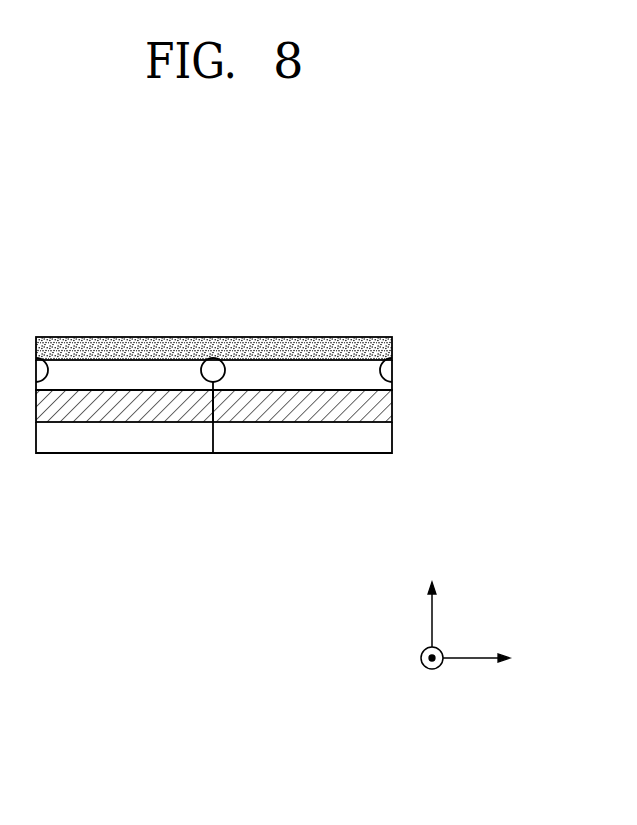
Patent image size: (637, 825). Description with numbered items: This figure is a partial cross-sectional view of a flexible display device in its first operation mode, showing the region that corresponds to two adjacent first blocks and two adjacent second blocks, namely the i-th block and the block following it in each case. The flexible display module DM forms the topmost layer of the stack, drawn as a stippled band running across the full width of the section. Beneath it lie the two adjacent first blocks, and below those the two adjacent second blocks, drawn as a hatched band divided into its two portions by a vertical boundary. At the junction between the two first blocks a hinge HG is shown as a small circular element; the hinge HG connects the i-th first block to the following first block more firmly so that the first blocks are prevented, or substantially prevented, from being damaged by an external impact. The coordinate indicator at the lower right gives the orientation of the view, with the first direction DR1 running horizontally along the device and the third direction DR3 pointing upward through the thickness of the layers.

The flexible display module DM is at (393, 345).
The hinge HG is at (212, 366).
The third direction DR3 is at (435, 602).
The first direction DR1 is at (485, 659).